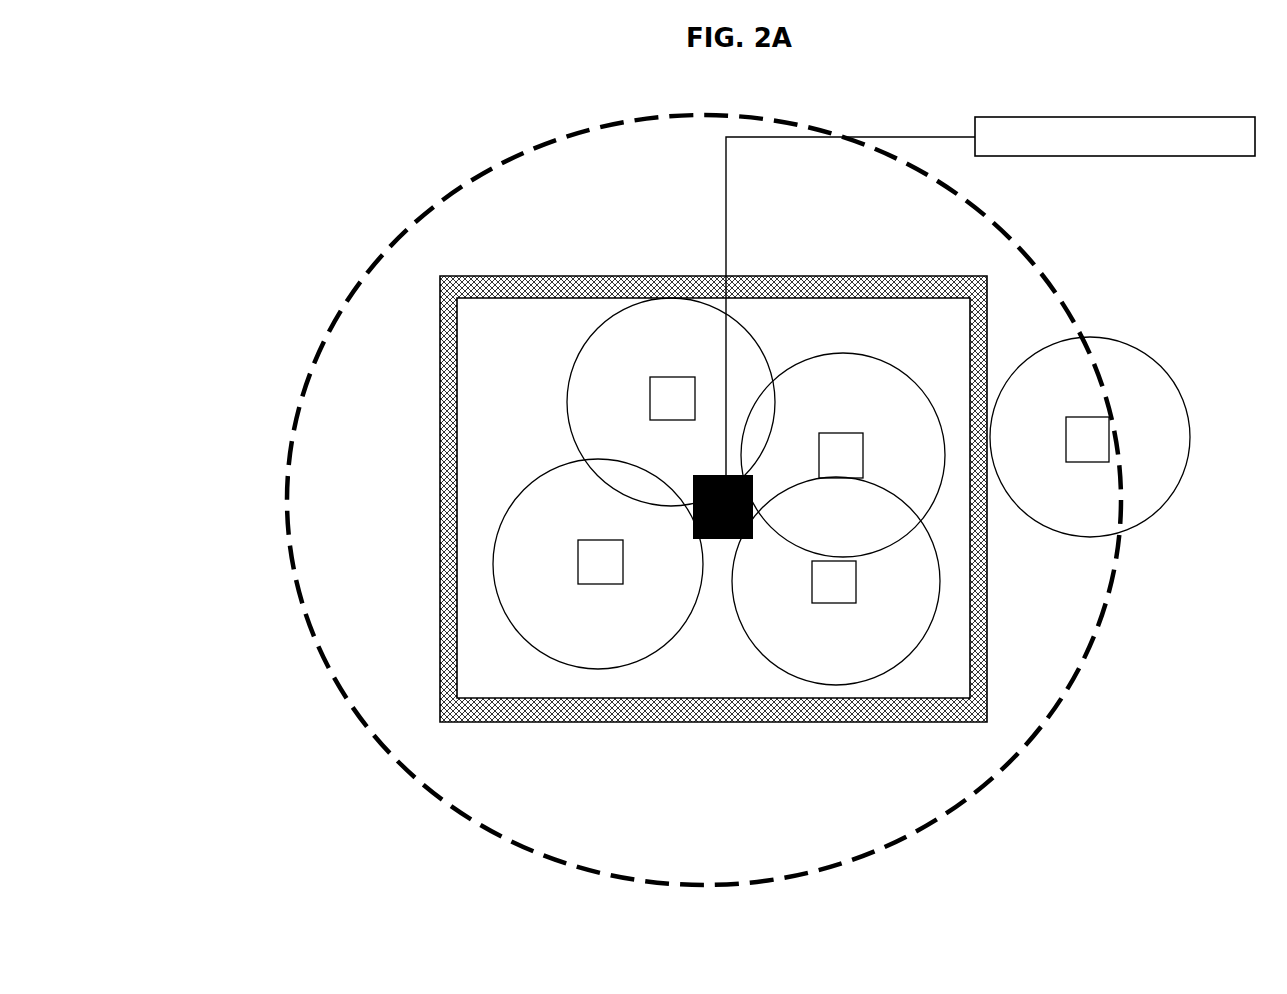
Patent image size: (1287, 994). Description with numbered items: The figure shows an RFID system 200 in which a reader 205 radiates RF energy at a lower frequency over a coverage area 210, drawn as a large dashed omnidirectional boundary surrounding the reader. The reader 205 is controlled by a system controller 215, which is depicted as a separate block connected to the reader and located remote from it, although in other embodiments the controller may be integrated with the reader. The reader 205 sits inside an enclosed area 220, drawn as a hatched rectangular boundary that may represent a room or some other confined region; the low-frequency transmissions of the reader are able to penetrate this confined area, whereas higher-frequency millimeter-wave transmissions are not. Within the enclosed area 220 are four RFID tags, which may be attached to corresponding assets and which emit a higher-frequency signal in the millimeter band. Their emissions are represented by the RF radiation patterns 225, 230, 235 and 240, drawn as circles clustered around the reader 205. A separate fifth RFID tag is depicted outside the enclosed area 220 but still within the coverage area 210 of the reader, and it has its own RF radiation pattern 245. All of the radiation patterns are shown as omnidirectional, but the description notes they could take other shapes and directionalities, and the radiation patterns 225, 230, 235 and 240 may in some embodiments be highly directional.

The system 200 is at (303, 138).
The reader 205 is at (716, 540).
The coverage area 210 is at (1052, 288).
The system controller 215 is at (1113, 117).
The enclosed area 220 is at (573, 276).
The RF radiation pattern 225 is at (567, 378).
The RF radiation pattern 230 is at (523, 483).
The RF radiation pattern 235 is at (752, 652).
The RF radiation pattern 240 is at (896, 373).
The RF radiation pattern 245 is at (1188, 372).